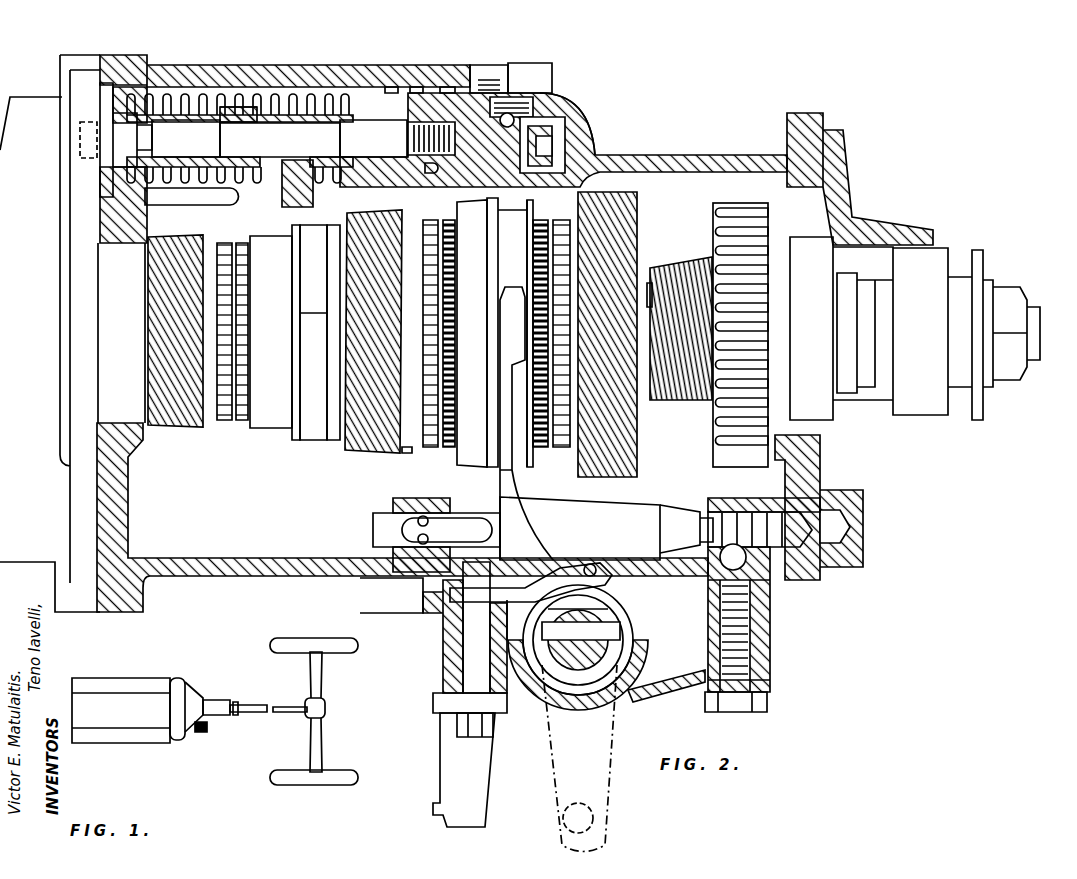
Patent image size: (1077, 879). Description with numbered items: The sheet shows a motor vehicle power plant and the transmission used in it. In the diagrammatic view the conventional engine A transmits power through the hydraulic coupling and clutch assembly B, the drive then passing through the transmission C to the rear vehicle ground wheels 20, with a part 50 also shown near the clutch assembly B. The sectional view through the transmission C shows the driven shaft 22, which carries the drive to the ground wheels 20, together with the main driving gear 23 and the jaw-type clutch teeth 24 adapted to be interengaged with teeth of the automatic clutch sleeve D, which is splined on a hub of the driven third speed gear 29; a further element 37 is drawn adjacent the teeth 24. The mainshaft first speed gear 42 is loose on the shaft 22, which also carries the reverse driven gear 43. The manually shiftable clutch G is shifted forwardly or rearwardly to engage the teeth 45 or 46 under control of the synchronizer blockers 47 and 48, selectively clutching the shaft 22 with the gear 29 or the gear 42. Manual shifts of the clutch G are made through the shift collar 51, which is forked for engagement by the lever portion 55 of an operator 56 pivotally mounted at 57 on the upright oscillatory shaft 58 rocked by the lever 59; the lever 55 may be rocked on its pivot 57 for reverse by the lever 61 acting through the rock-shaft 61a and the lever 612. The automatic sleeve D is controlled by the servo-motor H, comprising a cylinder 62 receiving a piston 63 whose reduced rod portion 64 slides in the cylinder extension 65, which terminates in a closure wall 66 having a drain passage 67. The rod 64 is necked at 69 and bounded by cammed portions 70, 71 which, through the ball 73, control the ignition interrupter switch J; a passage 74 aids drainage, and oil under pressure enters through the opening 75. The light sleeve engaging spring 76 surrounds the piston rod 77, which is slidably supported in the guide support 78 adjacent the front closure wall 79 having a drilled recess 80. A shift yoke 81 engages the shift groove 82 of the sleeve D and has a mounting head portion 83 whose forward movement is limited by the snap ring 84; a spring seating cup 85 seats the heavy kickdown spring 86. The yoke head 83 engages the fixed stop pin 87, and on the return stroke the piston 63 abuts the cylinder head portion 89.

In FIG. 1, the engine A is at (143, 685).
In FIG. 1, the hydraulic coupling and clutch assembly B is at (213, 660).
In FIG. 2, the transmission C is at (653, 163).
In FIG. 1, the transmission C is at (218, 700).
In FIG. 1, the rear vehicle ground wheels 20 is at (335, 767).
In FIG. 1, the driven shaft 22 is at (235, 720).
In FIG. 1, the brake 50 is at (200, 733).
In FIG. 2, the main driving gear 23 is at (163, 428).
In FIG. 2, the jaw-type clutch teeth 24 is at (230, 225).
In FIG. 2, the third speed gear 29 is at (350, 452).
In FIG. 2, the bearing 37 is at (243, 243).
In FIG. 2, the mainshaft first speed gear 42 is at (625, 221).
In FIG. 2, the reverse driven gear 43 is at (743, 207).
In FIG. 2, the clutch teeth 45 is at (412, 447).
In FIG. 2, the clutch teeth 46 is at (560, 455).
In FIG. 2, the synchronizer blocker 47 is at (440, 455).
In FIG. 2, the synchronizer blocker 48 is at (513, 472).
In FIG. 2, the shift collar 51 is at (497, 475).
In FIG. 2, the lever portion 55 is at (673, 510).
In FIG. 2, the operator 56 is at (620, 612).
In FIG. 2, the pivot 57 is at (622, 632).
In FIG. 2, the upright oscillatory shaft 58 is at (622, 662).
In FIG. 2, the lever 59 is at (598, 797).
In FIG. 2, the lever 61 is at (443, 766).
In FIG. 2, the rock-shaft 61a is at (472, 650).
In FIG. 2, the lever hub 612 is at (592, 552).
In FIG. 2, the cylinder 62 is at (392, 90).
In FIG. 2, the piston 63 is at (415, 90).
In FIG. 2, the rod portion 64 is at (455, 245).
In FIG. 2, the cylinder extension 65 is at (489, 79).
In FIG. 2, the closure wall 66 is at (557, 113).
In FIG. 2, the drain passage 67 is at (535, 192).
In FIG. 2, the neck 69 is at (496, 214).
In FIG. 2, the cammed portion 70 is at (540, 118).
In FIG. 2, the cammed portion 71 is at (520, 122).
In FIG. 2, the ball 73 is at (434, 168).
In FIG. 2, the passage 74 is at (545, 140).
In FIG. 2, the opening 75 is at (423, 258).
In FIG. 2, the sleeve engaging spring 76 is at (333, 107).
In FIG. 2, the piston rod 77 is at (334, 150).
In FIG. 2, the guide support 78 is at (108, 190).
In FIG. 2, the front closure wall 79 is at (80, 252).
In FIG. 2, the drilled recess 80 is at (78, 160).
In FIG. 2, the shift yoke 81 is at (308, 277).
In FIG. 2, the shift groove 82 is at (300, 420).
In FIG. 2, the mounting head portion 83 is at (273, 121).
In FIG. 2, the snap ring 84 is at (222, 128).
In FIG. 2, the spring seating cup 85 is at (255, 107).
In FIG. 2, the kickdown spring 86 is at (186, 138).
In FIG. 2, the stop pin 87 is at (225, 205).
In FIG. 2, the cylinder head portion 89 is at (408, 140).
In FIG. 2, the automatic clutch sleeve D is at (280, 428).
In FIG. 2, the manually shiftable clutch G is at (453, 462).
In FIG. 2, the servo-motor H is at (445, 90).
In FIG. 2, the engine ignition interrupter switch J is at (552, 72).